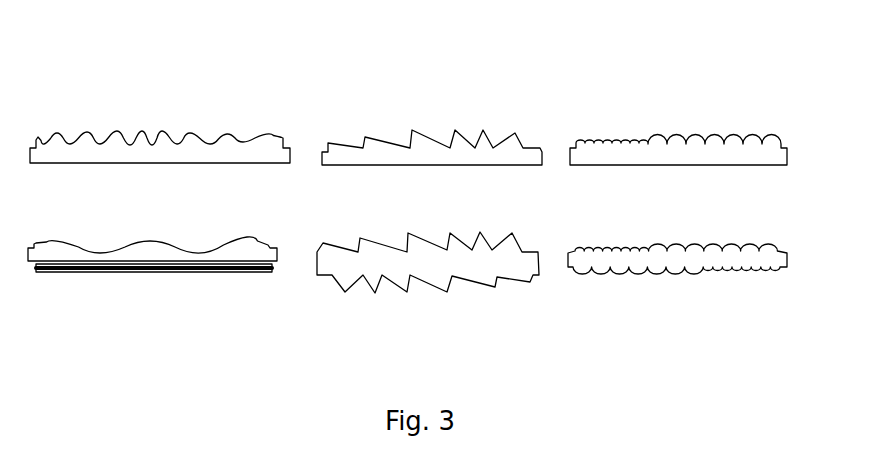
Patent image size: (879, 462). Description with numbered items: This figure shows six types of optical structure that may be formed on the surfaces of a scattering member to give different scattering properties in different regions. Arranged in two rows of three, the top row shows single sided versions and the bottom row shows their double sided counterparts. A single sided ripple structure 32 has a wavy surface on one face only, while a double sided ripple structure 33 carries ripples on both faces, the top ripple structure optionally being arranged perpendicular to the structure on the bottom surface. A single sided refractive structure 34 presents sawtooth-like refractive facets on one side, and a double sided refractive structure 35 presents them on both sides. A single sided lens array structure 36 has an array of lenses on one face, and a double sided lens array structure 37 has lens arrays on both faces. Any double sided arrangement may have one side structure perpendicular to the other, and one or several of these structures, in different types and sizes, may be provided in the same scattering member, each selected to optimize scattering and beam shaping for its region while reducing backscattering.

The single sided ripple structure 32 is at (195, 132).
The double sided ripple structure 33 is at (192, 273).
The single sided refractive structure 34 is at (455, 132).
The double sided refractive structure 35 is at (465, 278).
The single sided lens array structure 36 is at (690, 132).
The double sided lens array structure 37 is at (705, 272).